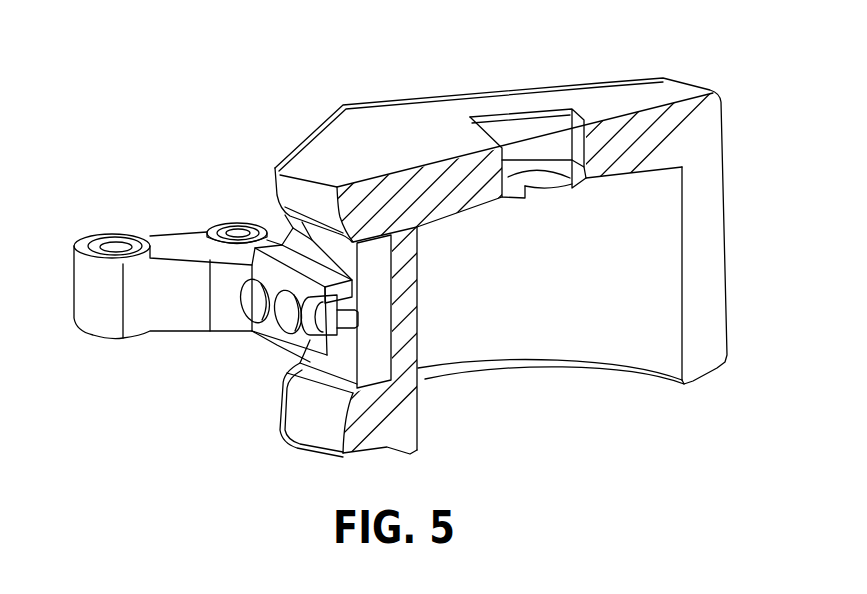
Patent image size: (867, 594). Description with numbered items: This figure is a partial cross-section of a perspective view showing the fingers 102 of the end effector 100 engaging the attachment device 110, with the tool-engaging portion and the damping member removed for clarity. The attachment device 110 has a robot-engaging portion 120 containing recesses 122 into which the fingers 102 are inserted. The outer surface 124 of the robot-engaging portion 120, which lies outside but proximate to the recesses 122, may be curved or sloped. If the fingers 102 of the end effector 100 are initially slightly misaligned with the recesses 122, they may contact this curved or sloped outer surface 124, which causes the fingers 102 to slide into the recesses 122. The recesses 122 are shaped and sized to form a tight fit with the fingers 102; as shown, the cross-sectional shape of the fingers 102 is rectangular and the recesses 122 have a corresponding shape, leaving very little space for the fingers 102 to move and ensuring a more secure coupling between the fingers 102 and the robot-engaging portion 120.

The attachment device 110 is at (296, 101).
The robot-engaging portion 120 is at (625, 102).
The recesses 122 is at (399, 300).
The outer surface 124 is at (299, 198).
The end effector 100 is at (167, 281).
The fingers 102 is at (216, 273).